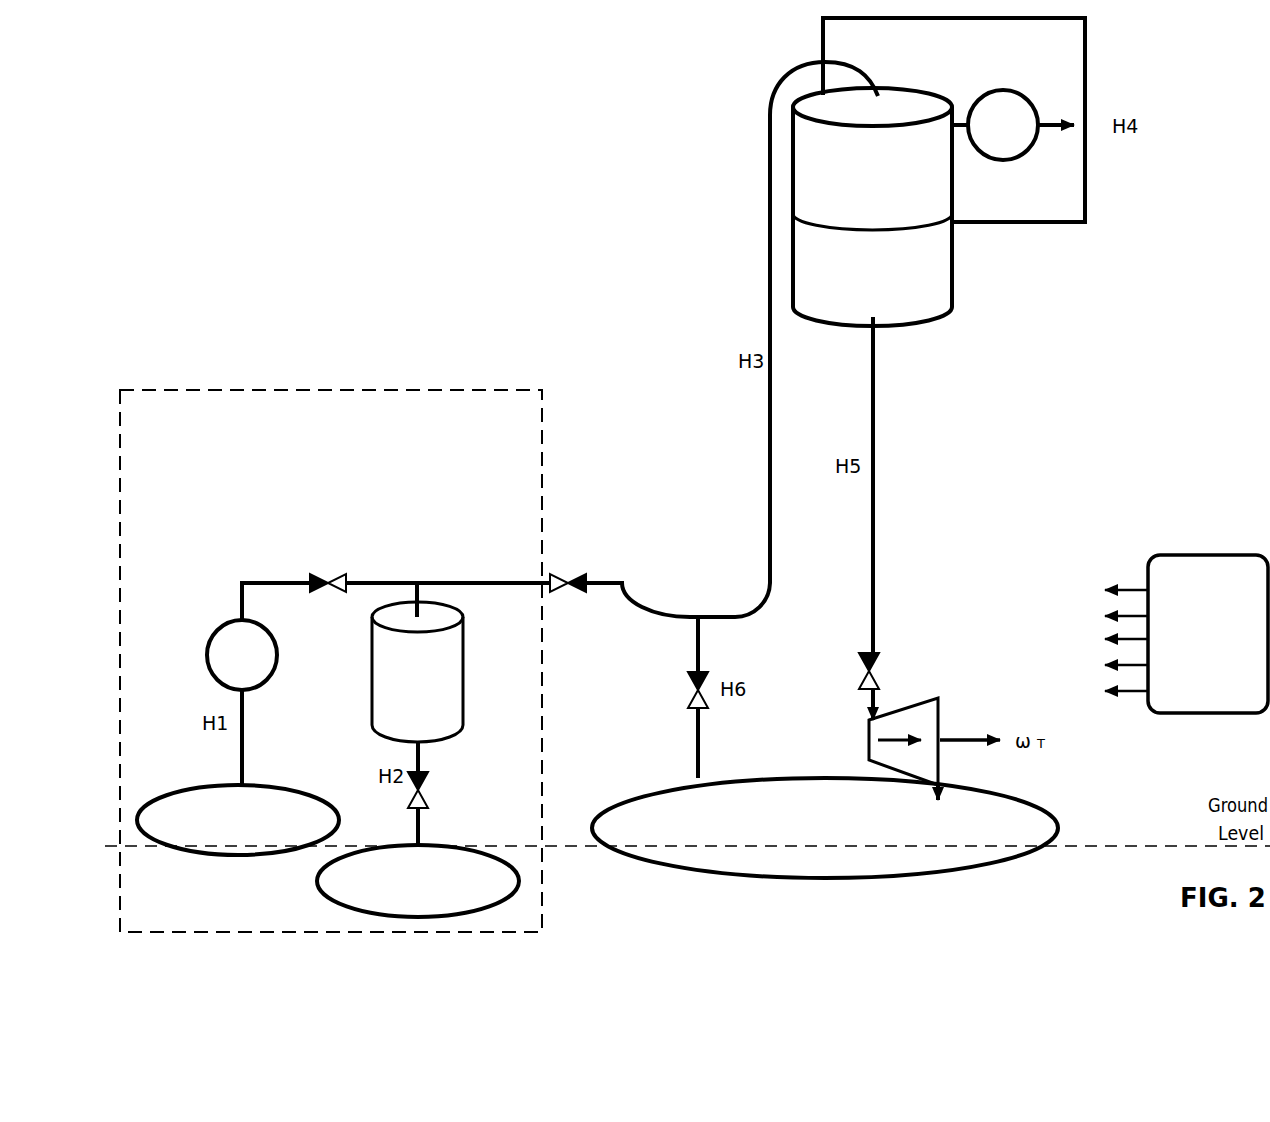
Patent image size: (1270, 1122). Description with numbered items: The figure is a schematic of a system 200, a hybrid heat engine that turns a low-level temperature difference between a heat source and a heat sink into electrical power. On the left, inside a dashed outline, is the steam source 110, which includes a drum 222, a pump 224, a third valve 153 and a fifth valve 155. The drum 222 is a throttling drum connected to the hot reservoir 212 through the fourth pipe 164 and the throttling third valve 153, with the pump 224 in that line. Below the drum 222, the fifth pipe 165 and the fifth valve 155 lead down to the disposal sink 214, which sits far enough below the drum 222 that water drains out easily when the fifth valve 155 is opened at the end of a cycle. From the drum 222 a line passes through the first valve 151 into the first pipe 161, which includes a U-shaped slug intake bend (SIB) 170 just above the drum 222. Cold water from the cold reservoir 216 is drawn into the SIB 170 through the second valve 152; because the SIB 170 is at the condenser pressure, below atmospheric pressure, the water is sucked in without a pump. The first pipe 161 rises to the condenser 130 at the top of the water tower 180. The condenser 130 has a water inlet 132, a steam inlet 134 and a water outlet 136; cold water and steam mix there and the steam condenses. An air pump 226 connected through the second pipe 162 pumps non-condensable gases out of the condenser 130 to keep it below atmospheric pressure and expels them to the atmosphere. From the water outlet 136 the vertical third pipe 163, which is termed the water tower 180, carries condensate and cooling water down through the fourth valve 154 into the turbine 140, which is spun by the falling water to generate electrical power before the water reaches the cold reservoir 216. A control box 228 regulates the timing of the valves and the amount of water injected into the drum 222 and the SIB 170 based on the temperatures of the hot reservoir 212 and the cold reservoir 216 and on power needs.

The system 200 is at (380, 124).
The steam source 110 is at (331, 661).
The fourth pipe 164 is at (242, 580).
The pump 224 is at (210, 650).
The hot reservoir 212 is at (238, 820).
The third valve 153 is at (328, 571).
The drum 222 is at (417, 662).
The fifth pipe 165 is at (412, 752).
The fifth valve 155 is at (433, 790).
The disposal sink 214 is at (418, 881).
The first valve 151 is at (568, 571).
The slug intake bend (SIB) 170 is at (682, 576).
The first pipe 161 is at (771, 78).
The second valve 152 is at (687, 690).
The condenser 130 is at (872, 207).
The water inlet 132 is at (896, 85).
The second pipe 162 is at (1085, 222).
The air pump 226 is at (1013, 153).
The steam inlet 134 is at (968, 234).
The water outlet 136 is at (892, 332).
The third pipe 163 is at (874, 502).
The water tower 180 is at (1004, 467).
The fourth valve 154 is at (883, 672).
The turbine 140 is at (868, 741).
The cold reservoir 216 is at (825, 828).
The control box 228 is at (1173, 634).